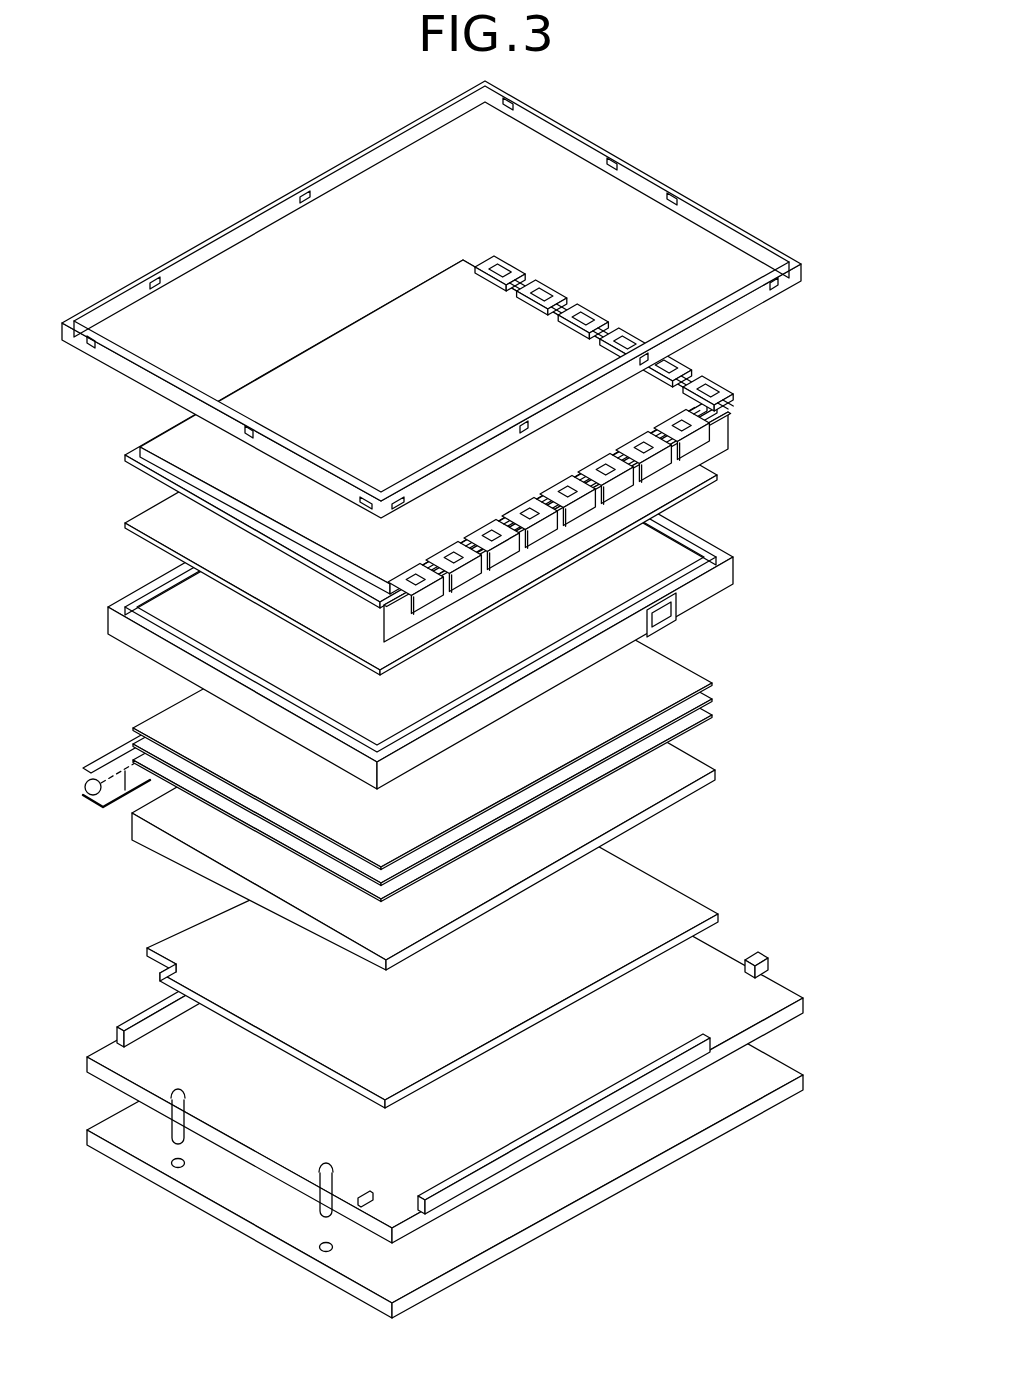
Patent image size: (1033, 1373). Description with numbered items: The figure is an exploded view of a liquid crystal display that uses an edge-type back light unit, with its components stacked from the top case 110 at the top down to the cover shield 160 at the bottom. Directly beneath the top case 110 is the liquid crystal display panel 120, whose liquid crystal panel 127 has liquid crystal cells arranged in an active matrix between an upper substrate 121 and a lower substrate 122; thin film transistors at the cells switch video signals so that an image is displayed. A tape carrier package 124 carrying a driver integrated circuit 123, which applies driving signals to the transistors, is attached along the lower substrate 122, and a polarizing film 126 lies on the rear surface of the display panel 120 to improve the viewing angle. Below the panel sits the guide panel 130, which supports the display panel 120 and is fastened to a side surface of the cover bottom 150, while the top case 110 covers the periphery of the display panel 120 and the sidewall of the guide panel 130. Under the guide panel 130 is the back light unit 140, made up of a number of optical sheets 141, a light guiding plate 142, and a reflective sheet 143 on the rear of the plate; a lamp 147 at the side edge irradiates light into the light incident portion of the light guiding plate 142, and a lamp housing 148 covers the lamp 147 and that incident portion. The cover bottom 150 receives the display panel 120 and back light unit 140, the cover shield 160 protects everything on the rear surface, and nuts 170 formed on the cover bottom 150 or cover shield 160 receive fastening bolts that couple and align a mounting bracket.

The top case 110 is at (780, 250).
The liquid crystal display panel 120 is at (529, 465).
The upper substrate 121 is at (667, 402).
The lower substrate 122 is at (703, 410).
The driver integrated circuit 123 is at (688, 425).
The tape carrier package 124 is at (698, 447).
The polarizing film 126 is at (688, 492).
The liquid crystal panel 127 is at (499, 434).
The guide panel 130 is at (712, 578).
The back light unit 140 is at (497, 826).
The optical sheets 141 is at (702, 686).
The light guiding plate 142 is at (633, 803).
The reflective sheet 143 is at (667, 897).
The lamp 147 is at (98, 770).
The lamp housing 148 is at (108, 758).
The cover bottom 150 is at (730, 943).
The cover shield 160 is at (767, 1063).
The nuts 170 is at (177, 1145).